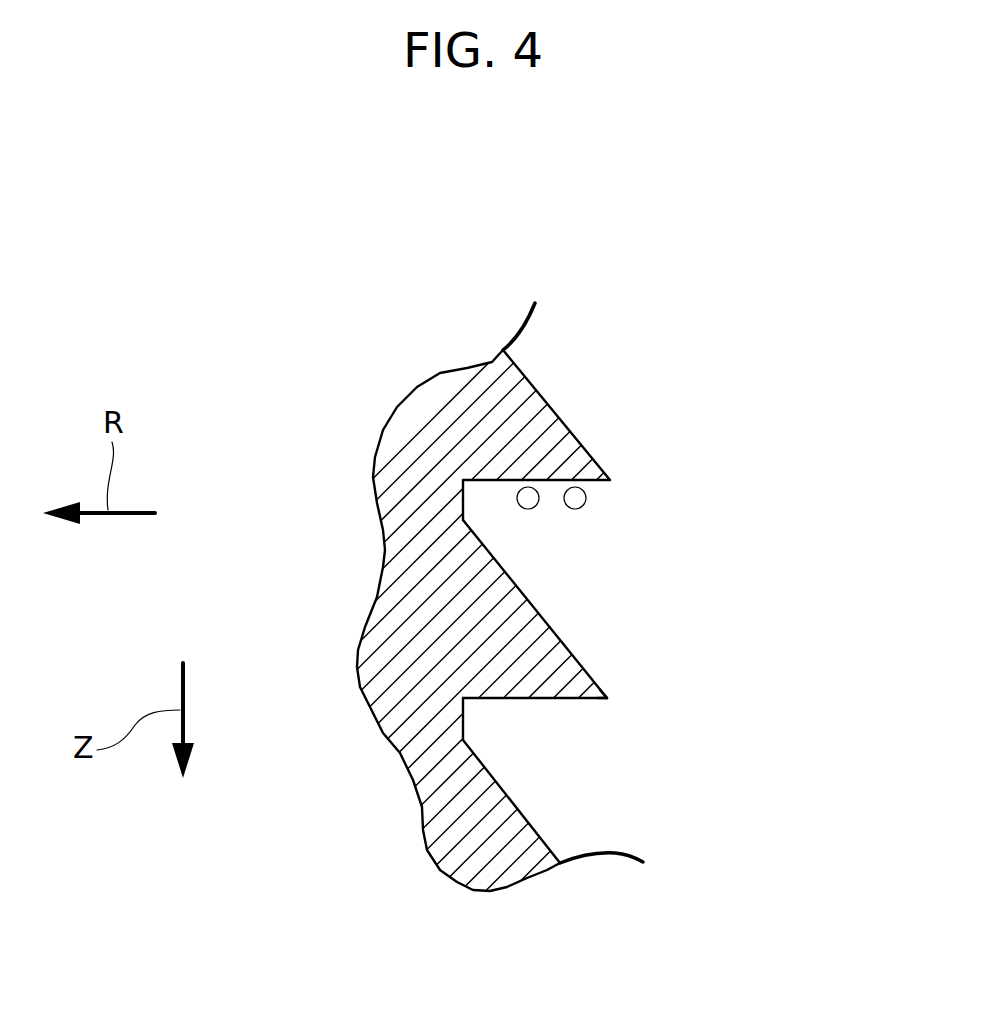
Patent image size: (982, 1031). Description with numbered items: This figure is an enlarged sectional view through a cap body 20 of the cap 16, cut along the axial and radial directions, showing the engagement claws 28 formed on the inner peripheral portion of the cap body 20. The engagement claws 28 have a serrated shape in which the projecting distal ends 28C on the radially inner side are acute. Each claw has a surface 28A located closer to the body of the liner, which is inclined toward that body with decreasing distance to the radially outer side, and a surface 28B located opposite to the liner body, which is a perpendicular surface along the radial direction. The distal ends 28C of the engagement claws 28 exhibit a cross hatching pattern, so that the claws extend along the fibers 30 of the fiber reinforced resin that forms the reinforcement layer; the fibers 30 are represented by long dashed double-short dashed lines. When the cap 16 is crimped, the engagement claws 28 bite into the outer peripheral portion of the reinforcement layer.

The cap 16 is at (491, 601).
The cap body 20 is at (698, 440).
The engagement claw 28 is at (650, 581).
The surface of the engagement claw 28A is at (520, 588).
The surface of the engagement claw 28B is at (517, 700).
The distal end of the engagement claw 28C is at (610, 698).
The fiber 30 is at (525, 510).